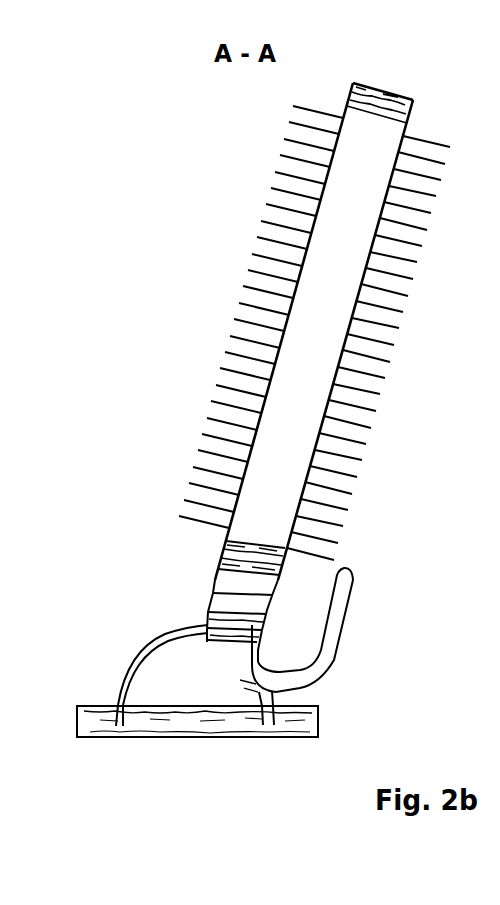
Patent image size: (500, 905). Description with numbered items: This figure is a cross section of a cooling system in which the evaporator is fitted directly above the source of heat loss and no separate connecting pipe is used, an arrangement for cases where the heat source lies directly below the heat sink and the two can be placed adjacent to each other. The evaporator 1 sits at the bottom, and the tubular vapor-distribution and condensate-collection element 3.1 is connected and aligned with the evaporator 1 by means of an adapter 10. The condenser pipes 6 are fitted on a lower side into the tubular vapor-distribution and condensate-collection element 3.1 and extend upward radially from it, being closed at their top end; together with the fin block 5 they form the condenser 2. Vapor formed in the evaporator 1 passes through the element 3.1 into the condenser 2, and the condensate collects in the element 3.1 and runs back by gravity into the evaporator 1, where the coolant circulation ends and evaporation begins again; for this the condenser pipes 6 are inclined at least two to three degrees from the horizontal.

The evaporator 1 is at (192, 681).
The condenser 2 is at (313, 233).
The tubular vapor-distribution and condensate-collection element 3.1 is at (242, 585).
The fin block 5 is at (247, 340).
The condenser pipes 6 is at (365, 98).
The adapter 10 is at (235, 615).